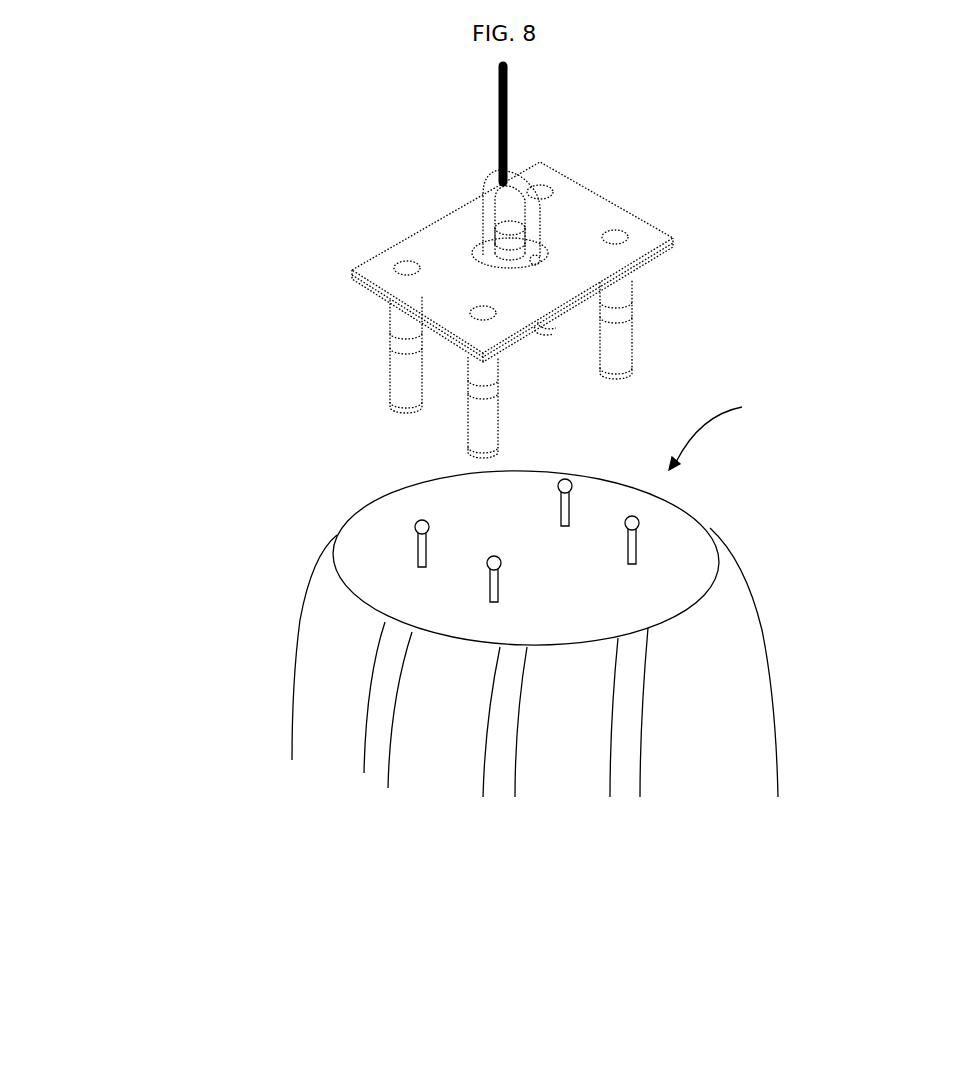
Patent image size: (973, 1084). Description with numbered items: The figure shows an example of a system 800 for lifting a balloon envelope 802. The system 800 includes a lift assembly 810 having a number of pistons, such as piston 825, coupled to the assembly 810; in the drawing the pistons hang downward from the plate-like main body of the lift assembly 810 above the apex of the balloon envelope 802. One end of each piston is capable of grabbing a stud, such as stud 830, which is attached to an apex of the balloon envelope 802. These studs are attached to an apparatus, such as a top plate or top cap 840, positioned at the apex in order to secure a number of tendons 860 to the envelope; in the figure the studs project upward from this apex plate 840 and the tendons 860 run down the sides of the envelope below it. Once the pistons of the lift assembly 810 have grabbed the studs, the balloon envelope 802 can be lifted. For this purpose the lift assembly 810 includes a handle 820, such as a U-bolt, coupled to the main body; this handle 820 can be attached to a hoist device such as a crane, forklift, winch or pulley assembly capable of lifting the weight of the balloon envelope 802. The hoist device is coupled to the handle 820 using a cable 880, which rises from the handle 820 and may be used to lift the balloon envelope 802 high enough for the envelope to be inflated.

The system 800 is at (952, 46).
The balloon envelope 802 is at (726, 434).
The lift assembly 810 is at (382, 248).
The handle 820 is at (540, 215).
The piston 825 is at (407, 375).
The stud 830 is at (413, 542).
The apex plate of balloon envelope 840 is at (703, 518).
The tendons 860 is at (643, 707).
The cable 880 is at (498, 132).